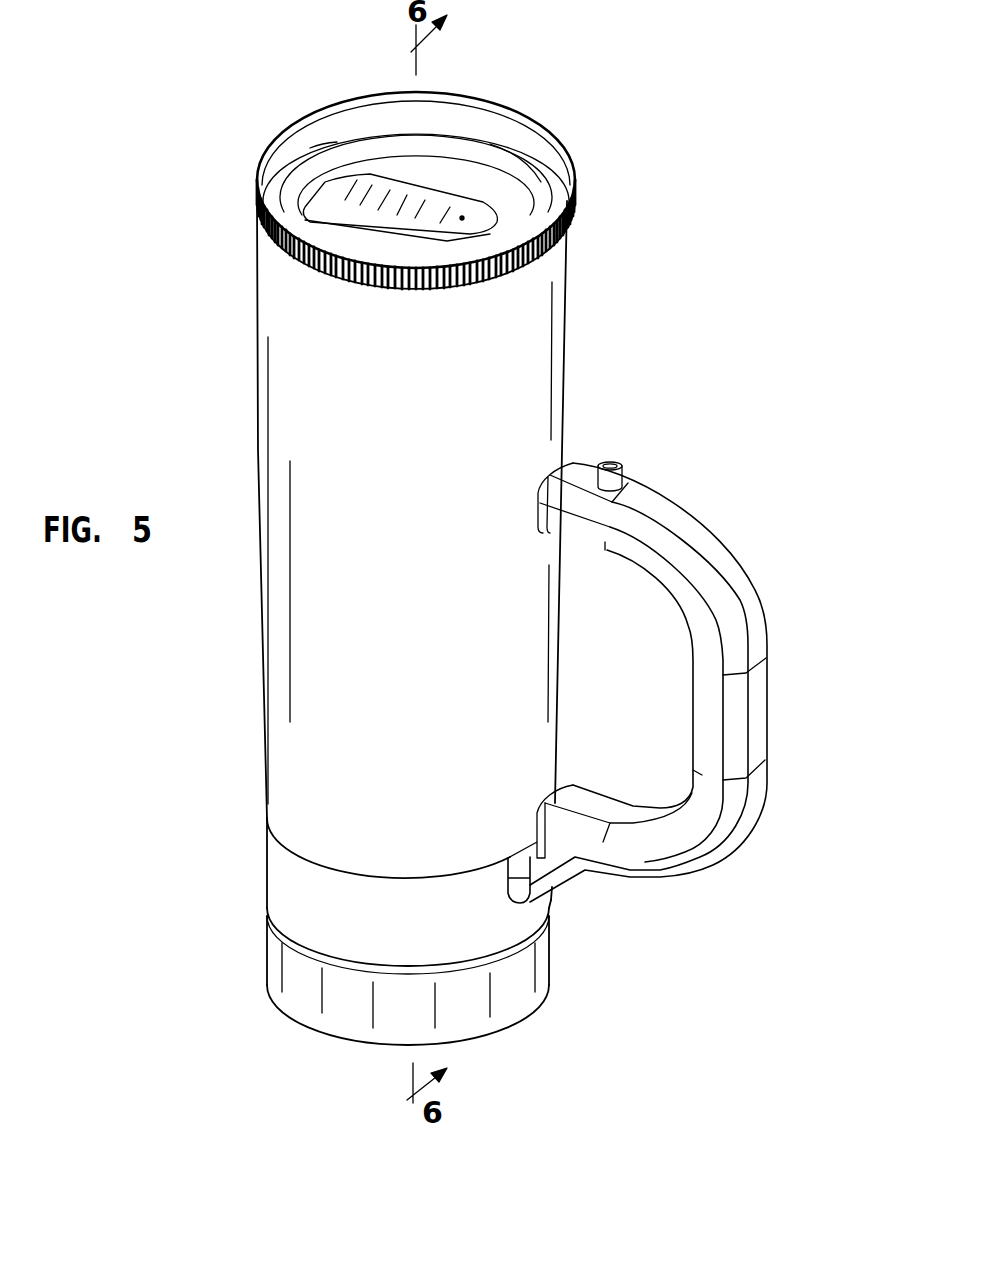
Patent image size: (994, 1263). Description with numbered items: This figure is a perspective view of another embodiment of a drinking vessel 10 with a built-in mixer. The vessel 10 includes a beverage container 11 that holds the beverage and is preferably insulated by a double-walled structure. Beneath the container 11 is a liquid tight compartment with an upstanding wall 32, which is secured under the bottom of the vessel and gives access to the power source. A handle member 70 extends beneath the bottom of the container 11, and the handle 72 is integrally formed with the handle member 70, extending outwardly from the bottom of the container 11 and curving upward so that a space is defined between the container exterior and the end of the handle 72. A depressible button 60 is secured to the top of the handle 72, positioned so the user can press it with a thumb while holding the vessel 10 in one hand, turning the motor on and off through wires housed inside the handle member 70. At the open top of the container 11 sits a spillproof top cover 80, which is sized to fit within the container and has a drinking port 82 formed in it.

The drinking vessel 10 is at (691, 79).
The beverage container 11 is at (257, 435).
The upstanding wall 32 is at (550, 955).
The depressible button 60 is at (612, 462).
The handle member 70 is at (265, 858).
The handle 72 is at (758, 602).
The top cover 80 is at (565, 186).
The drinking port 82 is at (327, 183).